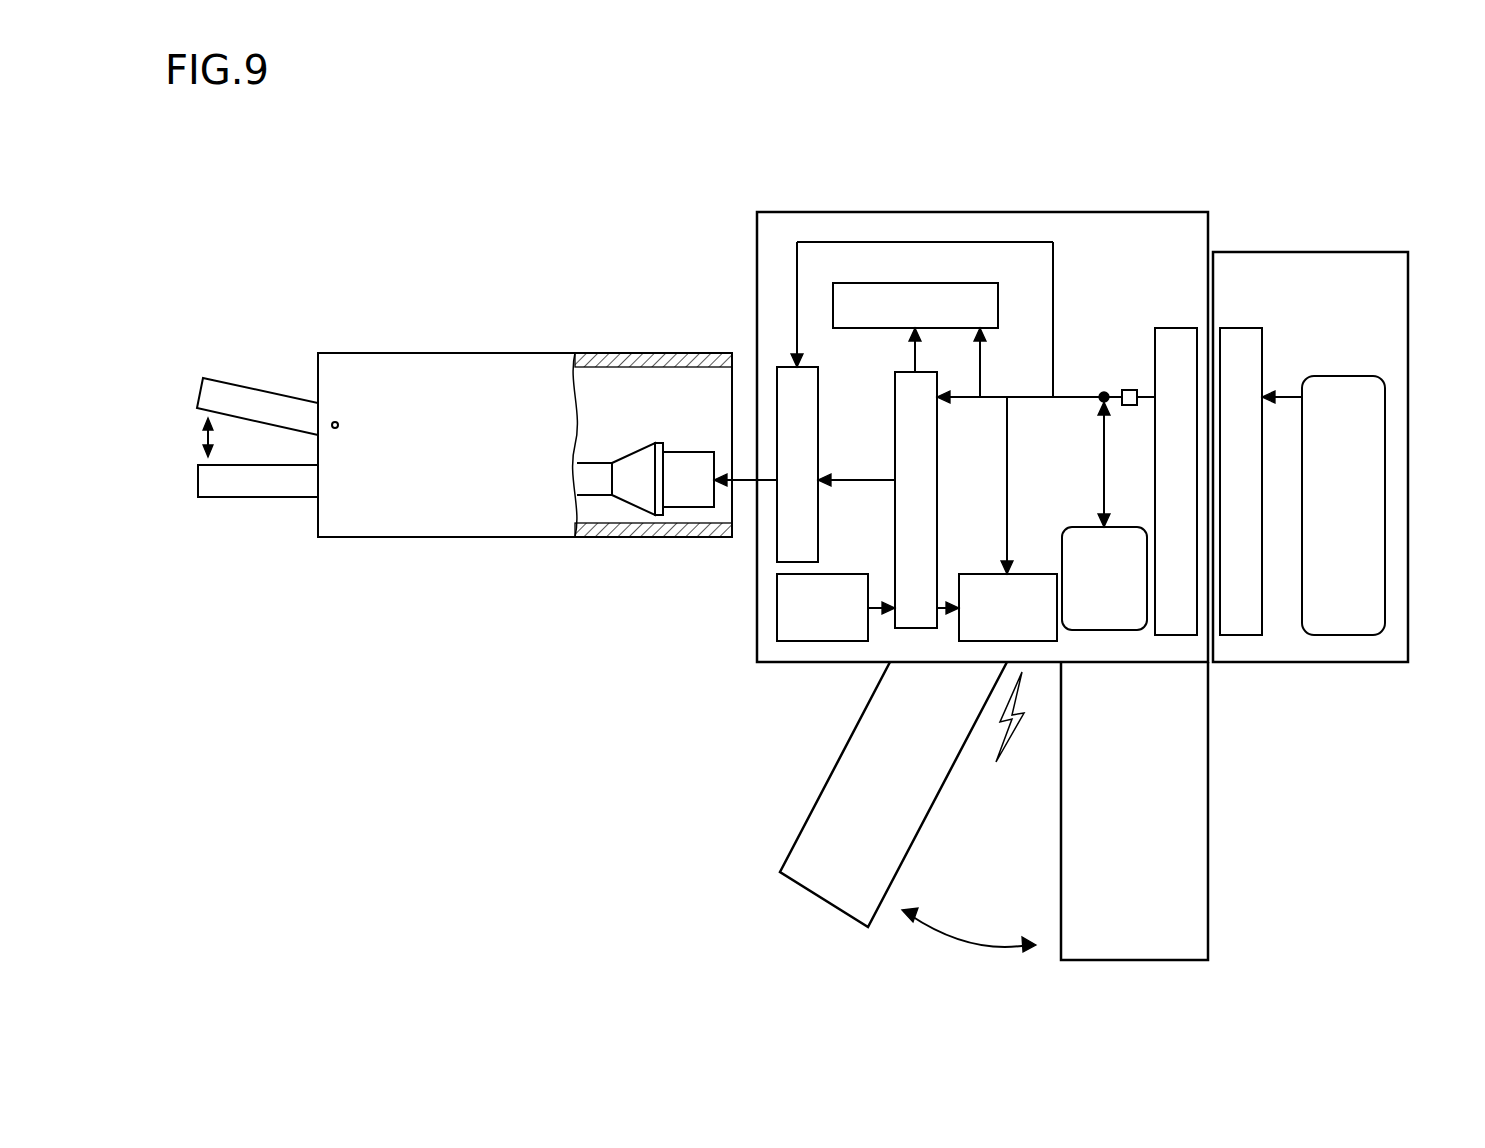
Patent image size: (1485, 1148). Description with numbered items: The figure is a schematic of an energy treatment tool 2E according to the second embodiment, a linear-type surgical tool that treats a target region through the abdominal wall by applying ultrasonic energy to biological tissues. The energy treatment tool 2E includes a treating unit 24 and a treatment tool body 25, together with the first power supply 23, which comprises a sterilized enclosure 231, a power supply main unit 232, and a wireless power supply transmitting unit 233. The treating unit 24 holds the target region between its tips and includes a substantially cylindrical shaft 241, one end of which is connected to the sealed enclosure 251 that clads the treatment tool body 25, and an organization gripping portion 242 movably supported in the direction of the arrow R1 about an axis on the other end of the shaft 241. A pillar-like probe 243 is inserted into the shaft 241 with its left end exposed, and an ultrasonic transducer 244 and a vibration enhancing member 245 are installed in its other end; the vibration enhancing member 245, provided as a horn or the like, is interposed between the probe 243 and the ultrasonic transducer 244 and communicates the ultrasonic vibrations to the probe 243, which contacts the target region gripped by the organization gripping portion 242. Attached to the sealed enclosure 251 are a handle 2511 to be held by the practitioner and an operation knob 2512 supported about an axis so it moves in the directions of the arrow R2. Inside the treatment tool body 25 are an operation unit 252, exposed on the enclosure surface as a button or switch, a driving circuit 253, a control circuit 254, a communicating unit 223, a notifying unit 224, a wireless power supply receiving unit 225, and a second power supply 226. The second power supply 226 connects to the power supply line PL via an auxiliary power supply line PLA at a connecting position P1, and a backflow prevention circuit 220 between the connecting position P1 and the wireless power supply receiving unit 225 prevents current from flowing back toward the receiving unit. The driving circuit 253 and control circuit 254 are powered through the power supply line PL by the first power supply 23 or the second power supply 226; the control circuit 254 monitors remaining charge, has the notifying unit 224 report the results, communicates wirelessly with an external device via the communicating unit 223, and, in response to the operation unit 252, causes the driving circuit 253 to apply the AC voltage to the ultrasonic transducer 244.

The energy treatment tool 2E is at (817, 102).
The first power supply 23 is at (1360, 252).
The sterilized enclosure 231 is at (1260, 252).
The power supply main unit 232 is at (1352, 637).
The wireless power supply transmitting unit 233 is at (1245, 637).
The treating unit 24 is at (397, 353).
The shaft 241 is at (490, 353).
The organization gripping portion 242 is at (232, 398).
The probe 243 is at (237, 488).
The ultrasonic transducer 244 is at (688, 460).
The vibration enhancing member 245 is at (628, 460).
The treatment tool body 25 is at (882, 212).
The sealed enclosure 251 is at (982, 212).
The handle 2511 is at (1205, 816).
The operation knob 2512 is at (808, 823).
The operation unit 252 is at (848, 574).
The driving circuit 253 is at (818, 418).
The control circuit 254 is at (937, 418).
The communicating unit 223 is at (1033, 574).
The notifying unit 224 is at (937, 283).
The wireless power supply receiving unit 225 is at (1172, 328).
The second power supply 226 is at (1122, 527).
The backflow prevention circuit 220 is at (1128, 390).
The connecting position P1 is at (1100, 394).
The power supply line PL is at (1080, 406).
The auxiliary power supply line PLA is at (1104, 471).
The arrow R1 is at (206, 437).
The arrow R2 is at (965, 937).